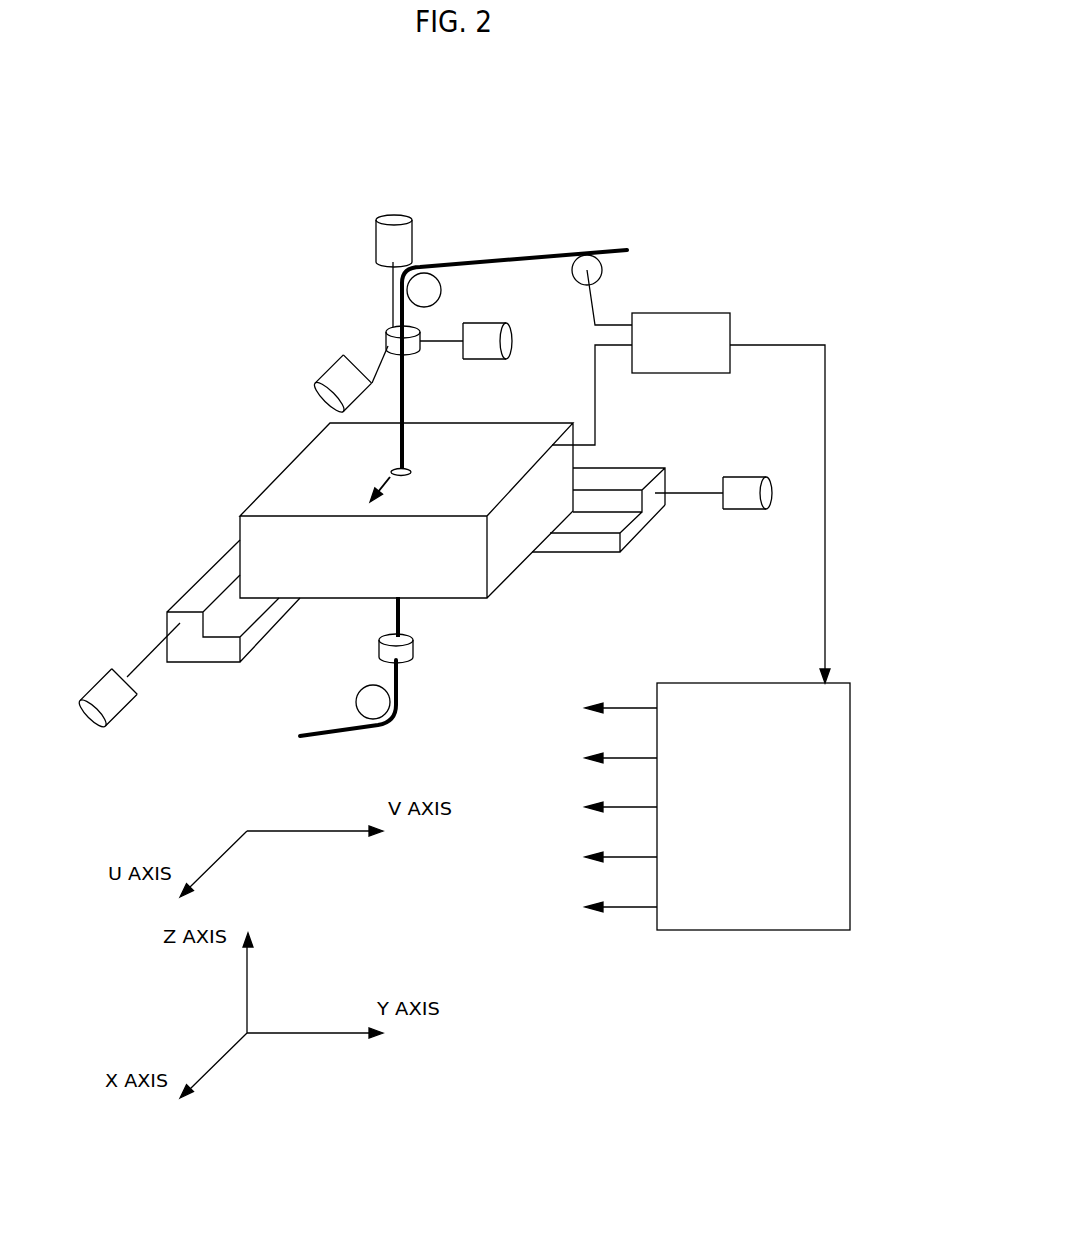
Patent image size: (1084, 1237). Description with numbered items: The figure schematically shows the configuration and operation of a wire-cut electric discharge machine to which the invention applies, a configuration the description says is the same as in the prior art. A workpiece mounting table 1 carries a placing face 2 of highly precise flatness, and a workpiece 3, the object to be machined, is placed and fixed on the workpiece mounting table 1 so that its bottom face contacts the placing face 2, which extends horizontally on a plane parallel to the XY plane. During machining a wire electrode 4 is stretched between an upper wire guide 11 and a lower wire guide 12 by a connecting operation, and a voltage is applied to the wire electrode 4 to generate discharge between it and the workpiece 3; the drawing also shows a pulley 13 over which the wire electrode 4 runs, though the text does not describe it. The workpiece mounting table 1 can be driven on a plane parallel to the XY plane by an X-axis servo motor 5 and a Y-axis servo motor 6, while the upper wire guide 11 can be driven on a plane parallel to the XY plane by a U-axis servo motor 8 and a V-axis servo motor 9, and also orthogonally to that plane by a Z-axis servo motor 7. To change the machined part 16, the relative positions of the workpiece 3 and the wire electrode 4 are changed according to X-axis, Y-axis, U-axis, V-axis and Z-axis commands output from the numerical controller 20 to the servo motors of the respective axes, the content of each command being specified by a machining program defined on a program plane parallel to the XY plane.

The workpiece mounting table 1 is at (635, 525).
The placing face 2 is at (598, 518).
The workpiece 3 is at (293, 543).
The wire electrode 4 is at (507, 260).
The X-axis servo motor 5 is at (100, 678).
The Y-axis servo motor 6 is at (745, 475).
The Z-axis servo motor 7 is at (412, 233).
The U-axis servo motor 8 is at (338, 358).
The V-axis servo motor 9 is at (485, 365).
The upper wire guide 11 is at (384, 331).
The lower wire guide 12 is at (413, 647).
The upper pulley 13 is at (447, 290).
The machined part 16 is at (380, 460).
The numerical controller 20 is at (850, 807).